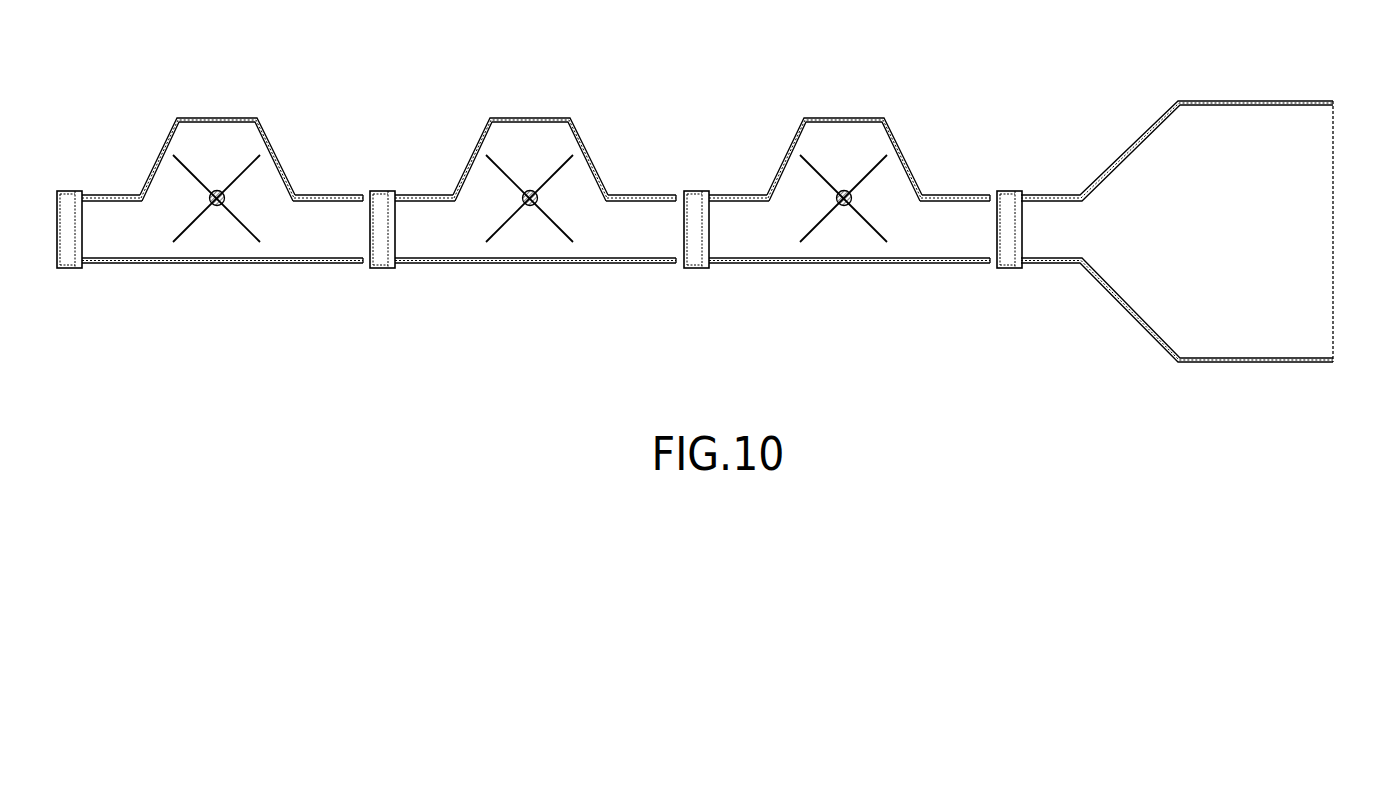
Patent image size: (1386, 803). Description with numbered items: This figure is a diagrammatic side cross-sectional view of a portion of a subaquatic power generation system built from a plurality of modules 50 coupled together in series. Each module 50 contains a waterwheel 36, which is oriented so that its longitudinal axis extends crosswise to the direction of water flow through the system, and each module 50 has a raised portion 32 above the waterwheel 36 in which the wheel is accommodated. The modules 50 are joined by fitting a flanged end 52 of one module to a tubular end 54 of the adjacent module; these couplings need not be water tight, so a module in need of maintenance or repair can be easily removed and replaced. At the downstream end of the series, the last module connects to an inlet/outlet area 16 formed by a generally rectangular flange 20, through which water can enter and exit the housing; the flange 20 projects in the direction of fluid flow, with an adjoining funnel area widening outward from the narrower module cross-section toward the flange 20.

The inlet/outlet area 16 is at (1270, 218).
The rectangular flange 20 is at (1268, 100).
The raised chamber portion 32 is at (531, 110).
The waterwheel 36 is at (476, 253).
The module 50 is at (536, 299).
The flanged end 52 is at (387, 180).
The tubular end 54 is at (641, 147).